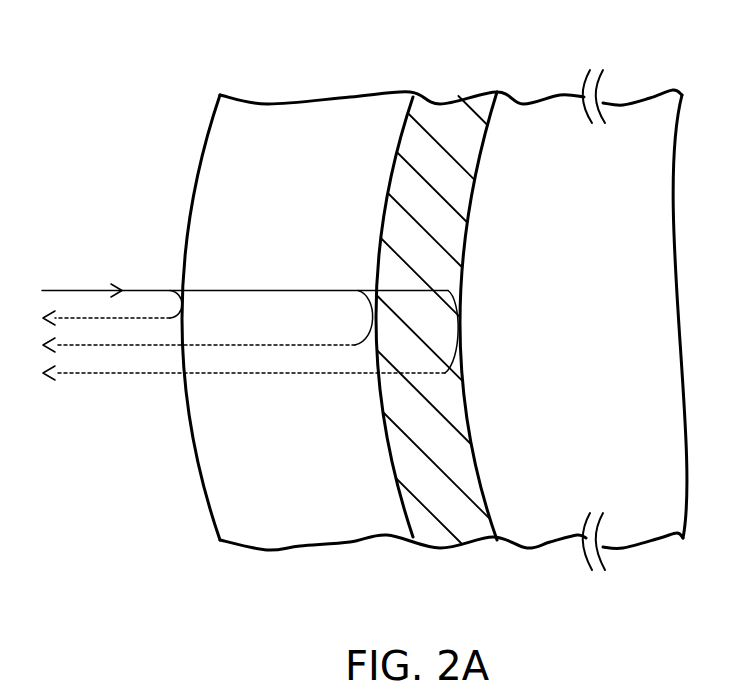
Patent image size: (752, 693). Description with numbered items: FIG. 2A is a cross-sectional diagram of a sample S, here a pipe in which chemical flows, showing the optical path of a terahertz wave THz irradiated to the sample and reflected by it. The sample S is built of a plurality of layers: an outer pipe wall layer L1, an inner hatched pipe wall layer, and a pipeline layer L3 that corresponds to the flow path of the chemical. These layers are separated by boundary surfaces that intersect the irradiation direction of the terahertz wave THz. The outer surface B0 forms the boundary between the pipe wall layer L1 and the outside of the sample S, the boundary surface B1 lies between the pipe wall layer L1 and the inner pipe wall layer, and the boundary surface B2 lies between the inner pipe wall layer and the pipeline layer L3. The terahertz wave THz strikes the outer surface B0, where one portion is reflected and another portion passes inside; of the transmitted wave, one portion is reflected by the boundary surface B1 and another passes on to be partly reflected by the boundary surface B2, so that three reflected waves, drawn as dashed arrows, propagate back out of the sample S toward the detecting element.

The sample S is at (186, 73).
The pipe wall layer L1 is at (313, 98).
The pipeline layer L3 is at (560, 97).
The terahertz wave THz is at (141, 291).
The outer surface B0 is at (208, 512).
The boundary surface B1 is at (405, 512).
The boundary surface B2 is at (487, 512).